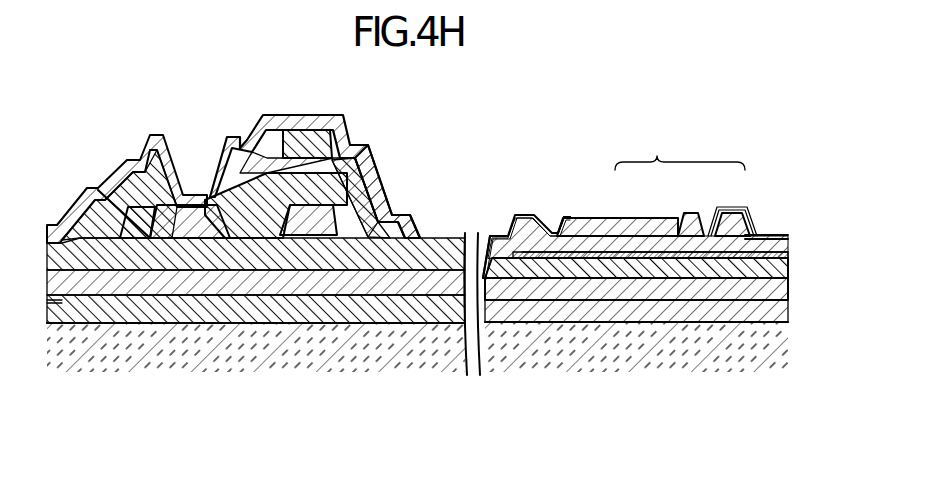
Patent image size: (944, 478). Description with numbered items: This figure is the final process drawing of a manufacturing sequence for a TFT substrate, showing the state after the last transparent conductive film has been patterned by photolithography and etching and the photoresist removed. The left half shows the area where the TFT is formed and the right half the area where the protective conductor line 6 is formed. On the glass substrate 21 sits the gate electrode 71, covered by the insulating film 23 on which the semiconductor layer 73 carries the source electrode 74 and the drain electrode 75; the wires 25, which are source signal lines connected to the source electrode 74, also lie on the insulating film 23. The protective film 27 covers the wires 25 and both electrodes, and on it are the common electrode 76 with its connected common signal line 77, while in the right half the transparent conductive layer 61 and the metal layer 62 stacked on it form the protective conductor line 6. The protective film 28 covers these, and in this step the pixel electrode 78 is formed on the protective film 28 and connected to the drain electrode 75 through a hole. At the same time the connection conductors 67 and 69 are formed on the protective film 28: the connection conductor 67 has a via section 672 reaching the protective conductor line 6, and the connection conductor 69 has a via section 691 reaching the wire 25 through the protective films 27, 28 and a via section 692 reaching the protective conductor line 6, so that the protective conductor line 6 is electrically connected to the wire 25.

The protective conductor line 6 is at (680, 149).
The glass substrate 21 is at (140, 358).
The insulating film 23 is at (447, 312).
The wire 25 is at (705, 292).
The protective film 27 is at (60, 303).
The protective film 28 is at (50, 224).
The transparent conductive layer 61 is at (670, 242).
The metal layer 62 is at (622, 245).
The connection conductor 67 is at (733, 215).
The connection conductor 69 is at (520, 215).
The gate electrode 71 is at (295, 312).
The semiconductor layer 73 is at (222, 257).
The source electrode 74 is at (312, 202).
The drain electrode 75 is at (112, 192).
The common electrode 76 is at (430, 237).
The common signal line 77 is at (318, 143).
The pixel electrode 78 is at (177, 158).
The via section 672 is at (712, 225).
The via section 691 is at (483, 232).
The via section 692 is at (556, 213).